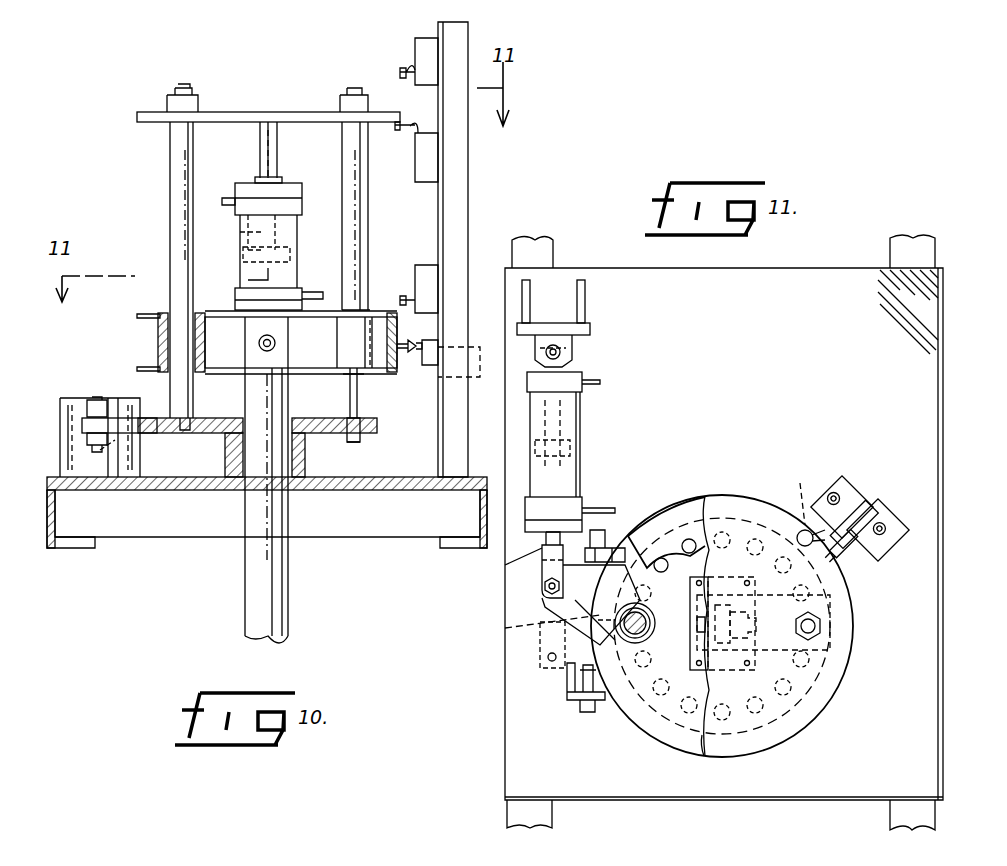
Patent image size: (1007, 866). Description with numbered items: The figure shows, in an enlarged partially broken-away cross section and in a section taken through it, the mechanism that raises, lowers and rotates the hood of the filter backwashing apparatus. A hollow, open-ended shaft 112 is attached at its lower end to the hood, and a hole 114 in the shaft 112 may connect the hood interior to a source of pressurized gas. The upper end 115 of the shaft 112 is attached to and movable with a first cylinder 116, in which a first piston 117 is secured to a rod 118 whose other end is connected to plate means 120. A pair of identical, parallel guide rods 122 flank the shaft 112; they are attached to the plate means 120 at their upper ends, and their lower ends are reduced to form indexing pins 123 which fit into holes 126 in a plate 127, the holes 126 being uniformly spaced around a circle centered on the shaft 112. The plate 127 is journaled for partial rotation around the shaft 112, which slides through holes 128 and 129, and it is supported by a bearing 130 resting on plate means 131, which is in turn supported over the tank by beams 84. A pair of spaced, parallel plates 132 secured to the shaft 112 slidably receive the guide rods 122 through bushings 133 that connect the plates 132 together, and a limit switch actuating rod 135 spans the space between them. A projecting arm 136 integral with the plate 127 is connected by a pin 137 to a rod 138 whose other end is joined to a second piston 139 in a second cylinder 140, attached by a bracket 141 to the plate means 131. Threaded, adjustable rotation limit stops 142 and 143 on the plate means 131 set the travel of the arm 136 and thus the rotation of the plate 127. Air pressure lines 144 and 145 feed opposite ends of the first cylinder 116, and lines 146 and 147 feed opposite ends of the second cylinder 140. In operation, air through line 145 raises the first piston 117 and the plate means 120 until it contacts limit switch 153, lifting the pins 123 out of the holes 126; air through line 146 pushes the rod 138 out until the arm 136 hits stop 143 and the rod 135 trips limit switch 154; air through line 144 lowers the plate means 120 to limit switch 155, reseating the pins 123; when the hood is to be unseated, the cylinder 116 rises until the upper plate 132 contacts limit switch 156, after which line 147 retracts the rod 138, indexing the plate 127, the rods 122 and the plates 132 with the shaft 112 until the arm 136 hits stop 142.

In FIG. 11, the beams 84 is at (545, 245).
In FIG. 10, the shaft 112 is at (290, 634).
In FIG. 10, the hole 114 is at (275, 343).
In FIG. 10, the upper end 115 is at (242, 322).
In FIG. 10, the first cylinder 116 is at (243, 265).
In FIG. 10, the first piston 117 is at (290, 247).
In FIG. 10, the rod 118 is at (277, 158).
In FIG. 10, the plate means 120 is at (283, 112).
In FIG. 11, the plate means 120 is at (846, 678).
In FIG. 10, the guide rods 122 is at (172, 205).
In FIG. 11, the guide rods 122 is at (660, 606).
In FIG. 10, the indexing pins 123 is at (210, 435).
In FIG. 10, the holes 126 is at (188, 424).
In FIG. 11, the holes 126 is at (690, 538).
In FIG. 10, the plate 127 is at (362, 428).
In FIG. 11, the plate 127 is at (688, 530).
In FIG. 10, the hole 128 is at (320, 406).
In FIG. 10, the hole 129 is at (243, 488).
In FIG. 10, the bearing 130 is at (306, 462).
In FIG. 10, the plate means 131 is at (432, 486).
In FIG. 11, the plate means 131 is at (770, 272).
In FIG. 10, the plates 132 is at (140, 330).
In FIG. 11, the plates 132 is at (694, 745).
In FIG. 10, the bushings 133 is at (160, 314).
In FIG. 11, the bushings 133 is at (660, 638).
In FIG. 10, the limit switch actuating rod 135 is at (420, 338).
In FIG. 11, the limit switch actuating rod 135 is at (806, 520).
In FIG. 10, the projecting arm 136 is at (145, 418).
In FIG. 11, the projecting arm 136 is at (577, 607).
In FIG. 10, the pin 137 is at (95, 398).
In FIG. 11, the pin 137 is at (540, 588).
In FIG. 11, the rod 138 is at (505, 570).
In FIG. 11, the second piston 139 is at (580, 445).
In FIG. 10, the second cylinder 140 is at (97, 482).
In FIG. 11, the second cylinder 140 is at (582, 412).
In FIG. 10, the bracket 141 is at (118, 482).
In FIG. 11, the bracket 141 is at (592, 332).
In FIG. 11, the rotation limit stop 142 is at (620, 512).
In FIG. 11, the rotation limit stop 143 is at (590, 702).
In FIG. 10, the air pressure line 144 is at (222, 195).
In FIG. 10, the air pressure line 145 is at (328, 283).
In FIG. 11, the air pressure line 146 is at (600, 381).
In FIG. 11, the air pressure line 147 is at (612, 508).
In FIG. 10, the limit switch 153 is at (408, 68).
In FIG. 11, the limit switch 153 is at (856, 555).
In FIG. 10, the limit switch 154 is at (430, 370).
In FIG. 11, the limit switch 154 is at (860, 488).
In FIG. 10, the limit switch 155 is at (415, 172).
In FIG. 10, the limit switch 156 is at (420, 265).